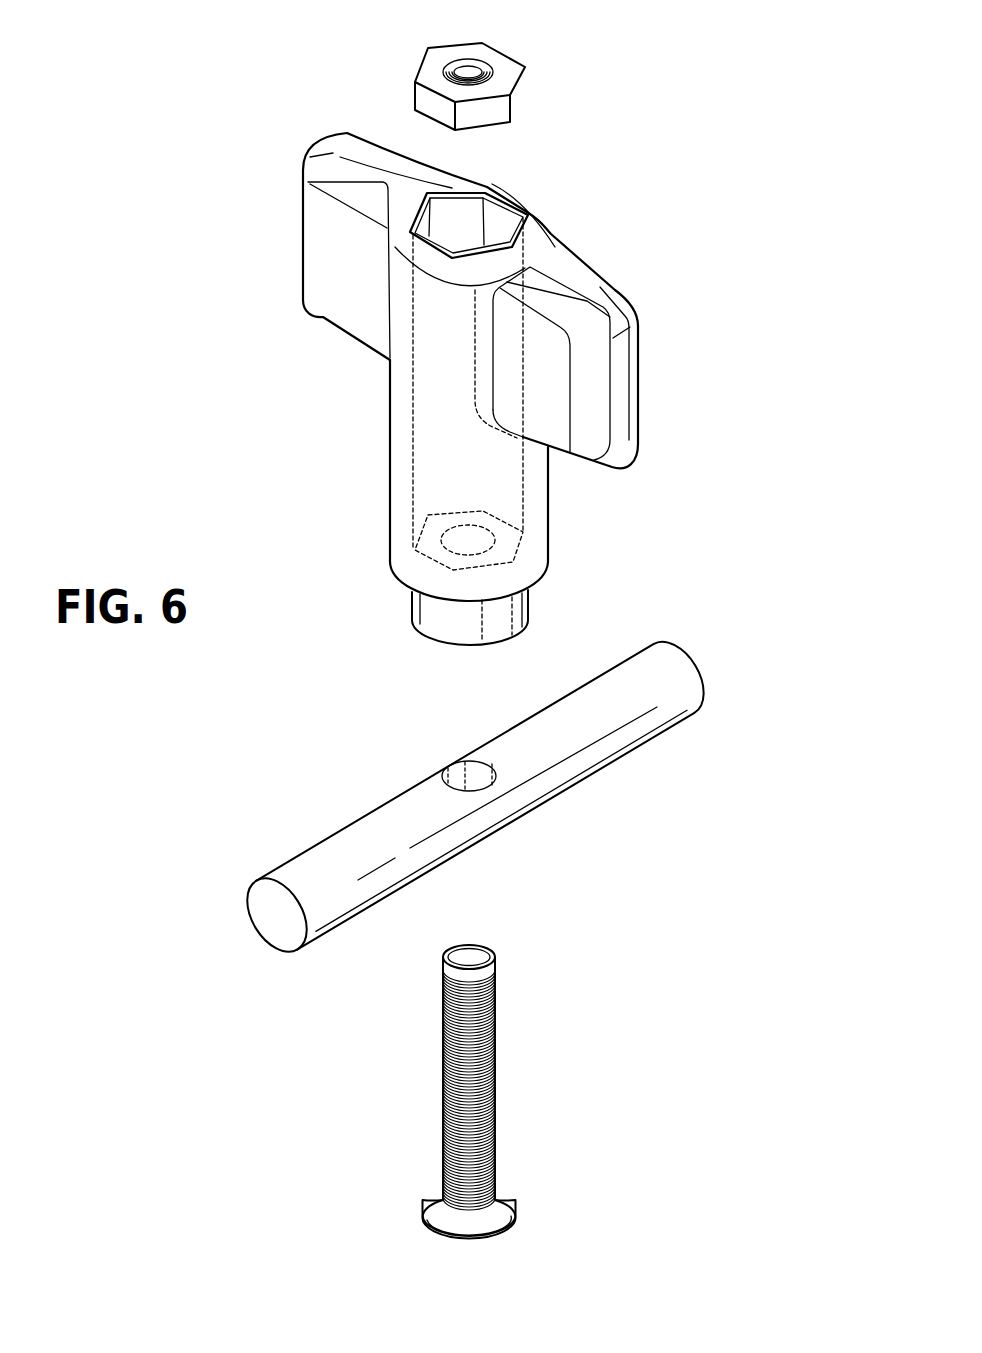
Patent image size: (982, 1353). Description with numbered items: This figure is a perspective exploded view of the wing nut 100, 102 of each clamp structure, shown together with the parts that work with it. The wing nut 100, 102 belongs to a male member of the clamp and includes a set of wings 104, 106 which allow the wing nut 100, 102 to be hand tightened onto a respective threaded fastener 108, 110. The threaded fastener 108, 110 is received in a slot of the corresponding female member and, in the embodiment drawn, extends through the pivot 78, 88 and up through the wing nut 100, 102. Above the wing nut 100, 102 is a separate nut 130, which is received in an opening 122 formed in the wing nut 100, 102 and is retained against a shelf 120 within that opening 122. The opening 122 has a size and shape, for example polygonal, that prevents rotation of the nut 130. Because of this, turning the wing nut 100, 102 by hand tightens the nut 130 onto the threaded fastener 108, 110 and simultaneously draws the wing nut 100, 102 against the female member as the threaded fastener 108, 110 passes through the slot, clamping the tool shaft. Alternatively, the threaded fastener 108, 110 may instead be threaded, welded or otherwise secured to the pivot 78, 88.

The pivot 78 is at (486, 764).
The pivot 88 is at (653, 677).
The wing nut 100 is at (560, 386).
The wing nut 102 is at (560, 386).
The wings 104 is at (655, 363).
The wings 106 is at (630, 363).
The threaded fastener 108 is at (539, 1091).
The threaded fastener 110 is at (487, 1038).
The shelf 120 is at (433, 538).
The opening 122 is at (503, 221).
The nut 130 is at (525, 78).